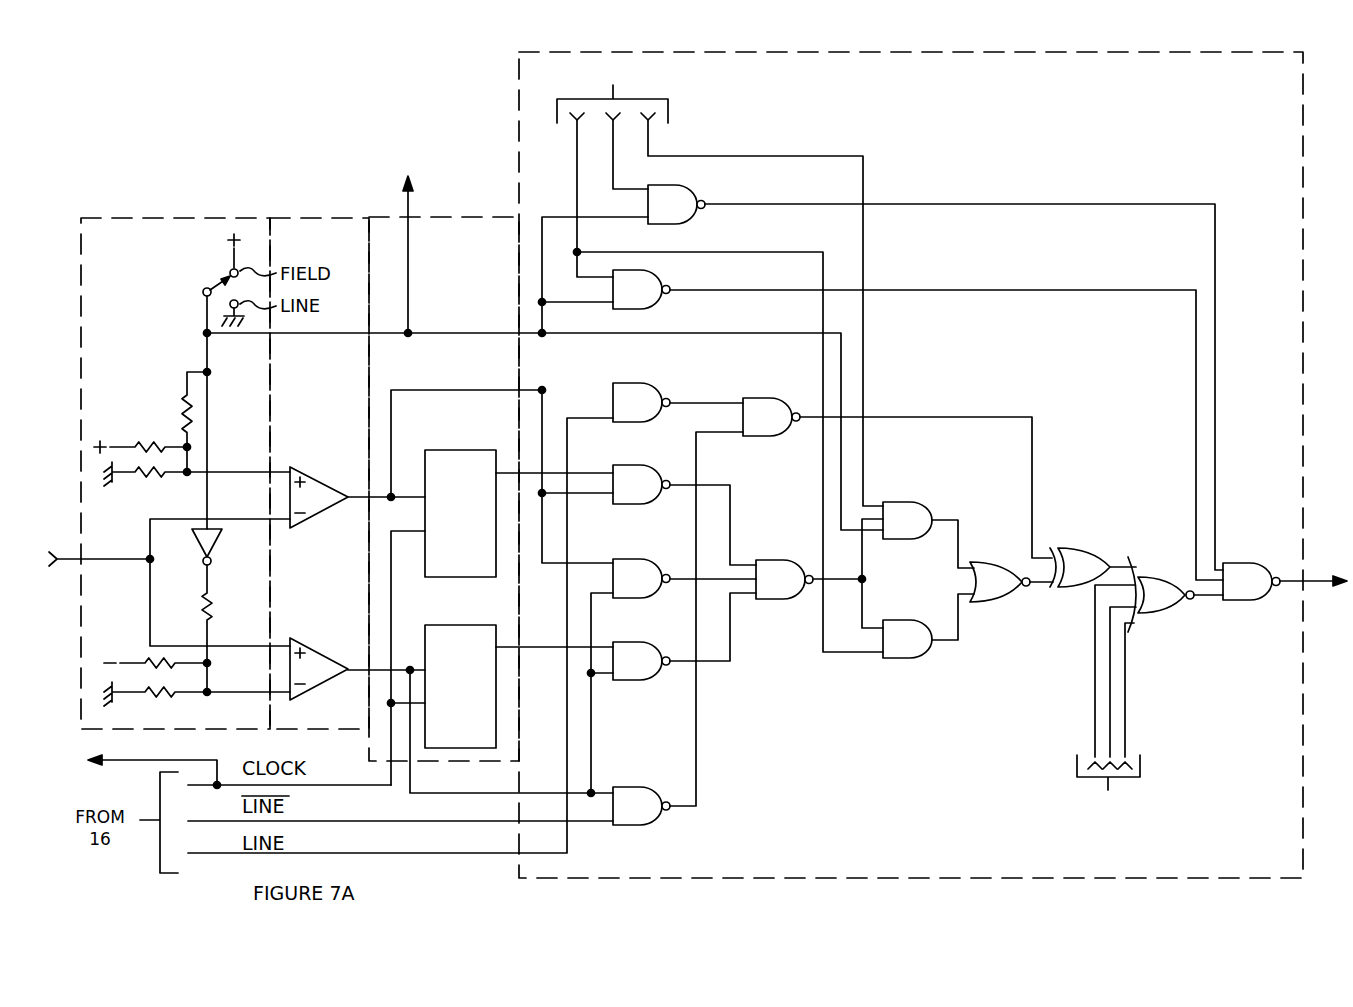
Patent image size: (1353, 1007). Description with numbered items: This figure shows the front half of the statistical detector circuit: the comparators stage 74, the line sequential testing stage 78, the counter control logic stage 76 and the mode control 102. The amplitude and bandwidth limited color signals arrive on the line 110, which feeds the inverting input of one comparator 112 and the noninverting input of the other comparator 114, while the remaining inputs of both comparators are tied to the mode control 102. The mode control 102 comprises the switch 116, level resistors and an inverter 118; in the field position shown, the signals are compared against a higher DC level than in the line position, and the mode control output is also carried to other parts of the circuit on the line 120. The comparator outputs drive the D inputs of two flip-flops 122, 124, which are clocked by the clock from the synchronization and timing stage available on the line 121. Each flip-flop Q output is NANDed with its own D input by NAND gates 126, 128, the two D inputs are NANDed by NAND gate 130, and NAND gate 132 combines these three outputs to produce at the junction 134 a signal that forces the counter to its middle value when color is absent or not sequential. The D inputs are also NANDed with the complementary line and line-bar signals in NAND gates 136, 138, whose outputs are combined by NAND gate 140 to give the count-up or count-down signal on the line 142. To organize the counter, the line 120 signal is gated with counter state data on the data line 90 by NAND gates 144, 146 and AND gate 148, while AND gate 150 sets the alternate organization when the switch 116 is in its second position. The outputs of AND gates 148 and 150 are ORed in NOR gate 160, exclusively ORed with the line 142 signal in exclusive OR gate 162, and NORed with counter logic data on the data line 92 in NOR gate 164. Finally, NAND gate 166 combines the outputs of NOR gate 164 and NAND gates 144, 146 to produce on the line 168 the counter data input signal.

The counter control logic stage 76 is at (748, 50).
The data line 90 is at (612, 92).
The data line 92 is at (1108, 789).
The mode control 102 is at (150, 216).
The comparators stage 74 is at (290, 216).
The line sequential testing stage 78 is at (437, 216).
The switch 116 is at (212, 286).
The line 120 is at (412, 326).
The comparator 112 is at (303, 468).
The comparator 114 is at (290, 640).
The inverter 118 is at (192, 548).
The line 110 is at (72, 560).
The line 121 is at (122, 755).
The flip-flop 122 is at (437, 451).
The flip-flop 124 is at (436, 626).
The NAND gate 126 is at (618, 466).
The NAND gate 128 is at (618, 642).
The NAND gate 130 is at (618, 560).
The NAND gate 132 is at (756, 561).
The junction 134 is at (874, 575).
The NAND gate 136 is at (618, 384).
The NAND gate 138 is at (618, 786).
The NAND gate 140 is at (748, 398).
The line 142 is at (906, 417).
The NAND gate 144 is at (666, 288).
The NAND gate 146 is at (690, 202).
The AND gate 148 is at (890, 502).
The AND gate 150 is at (890, 620).
The NOR gate 160 is at (976, 562).
The exclusive OR gate 162 is at (1065, 548).
The NOR gate 164 is at (1147, 576).
The NAND gate 166 is at (1236, 563).
The line 168 is at (1290, 590).